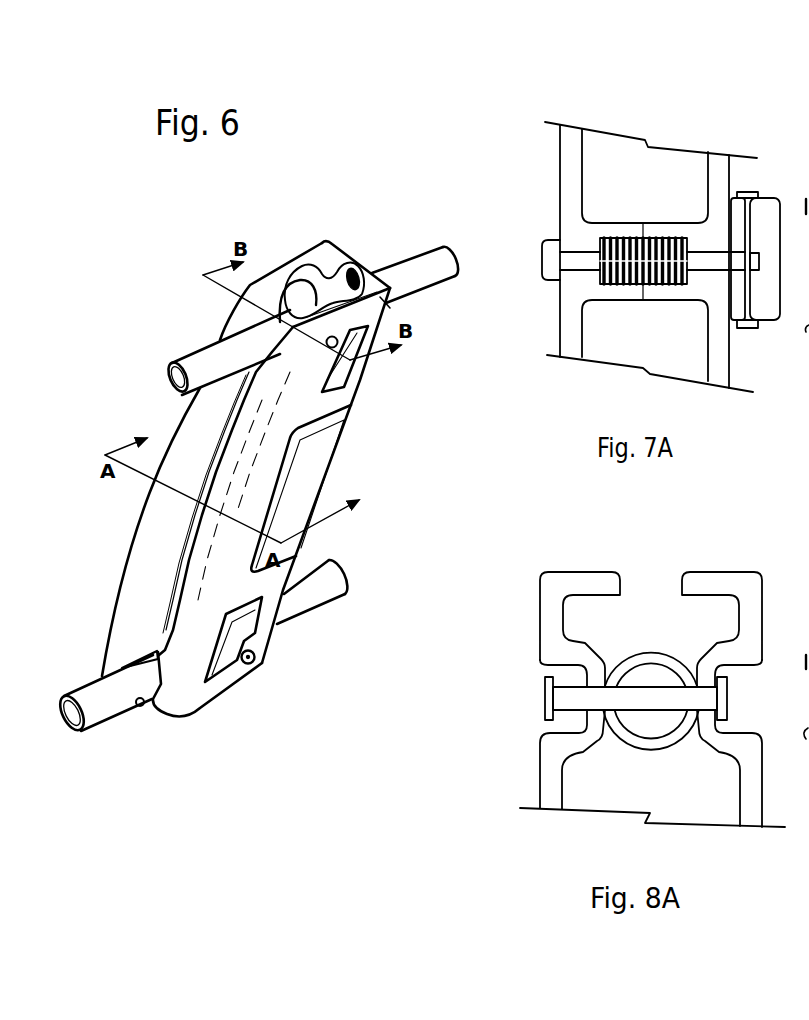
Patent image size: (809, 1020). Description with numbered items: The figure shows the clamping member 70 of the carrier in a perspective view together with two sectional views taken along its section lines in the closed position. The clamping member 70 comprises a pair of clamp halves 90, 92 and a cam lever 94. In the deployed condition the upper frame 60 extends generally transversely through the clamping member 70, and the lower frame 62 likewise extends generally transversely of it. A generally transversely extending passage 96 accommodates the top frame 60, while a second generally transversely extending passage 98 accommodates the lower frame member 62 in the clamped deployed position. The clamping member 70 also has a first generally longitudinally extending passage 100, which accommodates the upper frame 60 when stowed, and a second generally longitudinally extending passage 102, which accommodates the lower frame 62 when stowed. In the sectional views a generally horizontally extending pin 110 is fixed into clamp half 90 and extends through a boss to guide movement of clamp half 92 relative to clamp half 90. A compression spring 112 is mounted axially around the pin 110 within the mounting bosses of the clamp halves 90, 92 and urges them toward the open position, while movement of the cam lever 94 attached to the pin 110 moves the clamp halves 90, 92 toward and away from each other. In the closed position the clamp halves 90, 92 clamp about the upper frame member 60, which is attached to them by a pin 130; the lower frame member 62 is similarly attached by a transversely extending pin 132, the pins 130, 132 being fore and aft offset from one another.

In FIG. 6, the upper frame 60 is at (410, 250).
In FIG. 8A, the upper frame 60 is at (649, 652).
In FIG. 6, the lower frame 62 is at (327, 597).
In FIG. 6, the clamping member 70 is at (124, 322).
In FIG. 7A, the clamping member 70 is at (652, 116).
In FIG. 8A, the clamping member 70 is at (652, 556).
In FIG. 6, the clamp half 90 is at (123, 582).
In FIG. 7A, the clamp half 90 is at (566, 334).
In FIG. 8A, the clamp half 90 is at (540, 758).
In FIG. 6, the clamp half 92 is at (197, 716).
In FIG. 7A, the clamp half 92 is at (719, 362).
In FIG. 8A, the clamp half 92 is at (757, 796).
In FIG. 6, the cam lever 94 is at (348, 460).
In FIG. 6, the transversely extending passage 96 is at (285, 335).
In FIG. 6, the transversely extending passage 98 is at (105, 676).
In FIG. 6, the first longitudinally extending passage 100 is at (292, 278).
In FIG. 6, the second longitudinally extending passage 102 is at (339, 266).
In FIG. 7A, the pin 110 is at (547, 245).
In FIG. 7A, the spring 112 is at (623, 237).
In FIG. 6, the pin 130 is at (390, 309).
In FIG. 8A, the pin 130 is at (547, 707).
In FIG. 6, the pin 132 is at (252, 664).